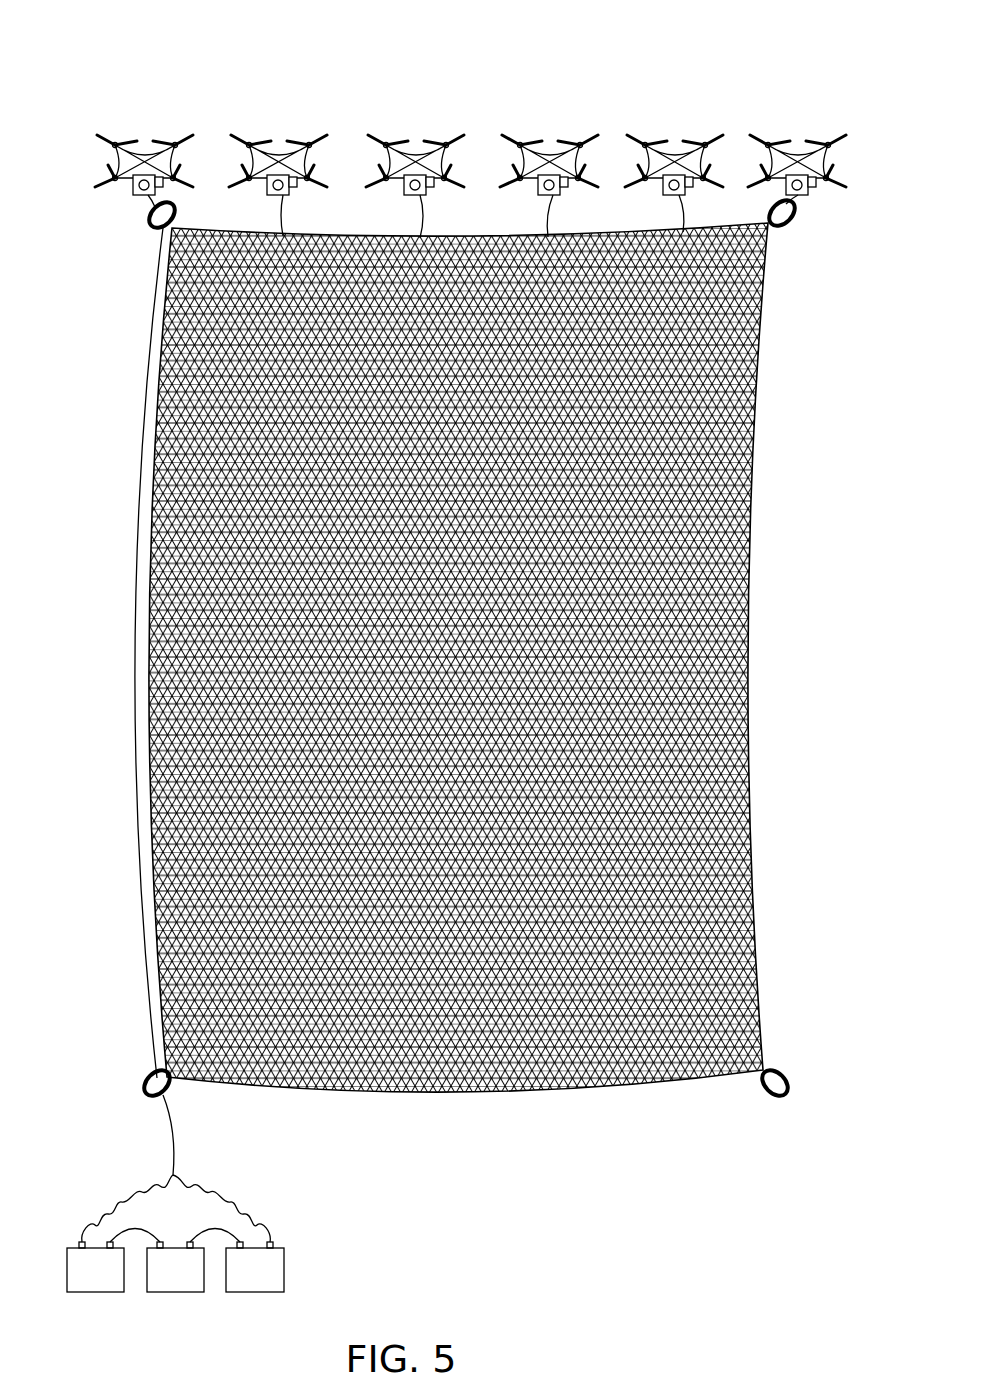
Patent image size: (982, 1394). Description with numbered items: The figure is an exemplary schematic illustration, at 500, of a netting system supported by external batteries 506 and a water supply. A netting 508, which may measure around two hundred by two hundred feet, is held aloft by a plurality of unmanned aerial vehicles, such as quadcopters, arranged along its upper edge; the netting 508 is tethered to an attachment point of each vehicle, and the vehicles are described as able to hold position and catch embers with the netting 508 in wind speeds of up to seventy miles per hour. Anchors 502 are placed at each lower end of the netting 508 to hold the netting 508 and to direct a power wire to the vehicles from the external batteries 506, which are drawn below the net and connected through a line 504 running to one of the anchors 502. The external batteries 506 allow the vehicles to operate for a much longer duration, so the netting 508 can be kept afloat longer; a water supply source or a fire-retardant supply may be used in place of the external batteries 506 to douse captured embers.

The netting system 500 is at (630, 47).
The anchors 502 is at (146, 216).
The tether rope 504 is at (135, 703).
The external batteries 506 is at (259, 1188).
The netting 508 is at (762, 355).